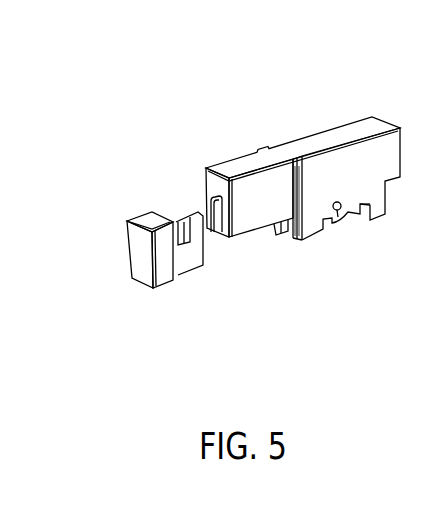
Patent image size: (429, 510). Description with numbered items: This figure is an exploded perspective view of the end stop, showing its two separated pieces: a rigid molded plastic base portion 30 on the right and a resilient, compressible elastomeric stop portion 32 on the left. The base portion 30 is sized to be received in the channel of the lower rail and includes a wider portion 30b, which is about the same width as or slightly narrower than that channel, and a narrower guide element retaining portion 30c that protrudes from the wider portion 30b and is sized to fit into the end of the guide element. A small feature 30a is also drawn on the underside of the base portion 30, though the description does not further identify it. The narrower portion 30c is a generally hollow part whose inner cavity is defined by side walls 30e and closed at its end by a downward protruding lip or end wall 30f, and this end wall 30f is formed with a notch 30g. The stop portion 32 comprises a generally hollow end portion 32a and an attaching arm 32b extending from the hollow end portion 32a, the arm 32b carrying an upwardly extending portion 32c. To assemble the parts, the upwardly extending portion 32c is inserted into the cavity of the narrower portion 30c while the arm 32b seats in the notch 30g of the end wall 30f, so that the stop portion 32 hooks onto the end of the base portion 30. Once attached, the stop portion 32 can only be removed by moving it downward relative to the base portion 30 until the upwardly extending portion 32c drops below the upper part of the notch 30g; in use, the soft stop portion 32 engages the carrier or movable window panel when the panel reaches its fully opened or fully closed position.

The base portion 30 is at (305, 106).
The pin 30a is at (338, 211).
The wider portion 30b is at (372, 129).
The narrower guide element retaining portion 30c is at (236, 167).
The side walls 30e is at (253, 215).
The end wall 30f is at (213, 187).
The notch 30g is at (220, 224).
The stop portion 32 is at (104, 218).
The hollow end portion 32a is at (140, 250).
The arm 32b is at (182, 267).
The upwardly extending portion 32c is at (196, 228).